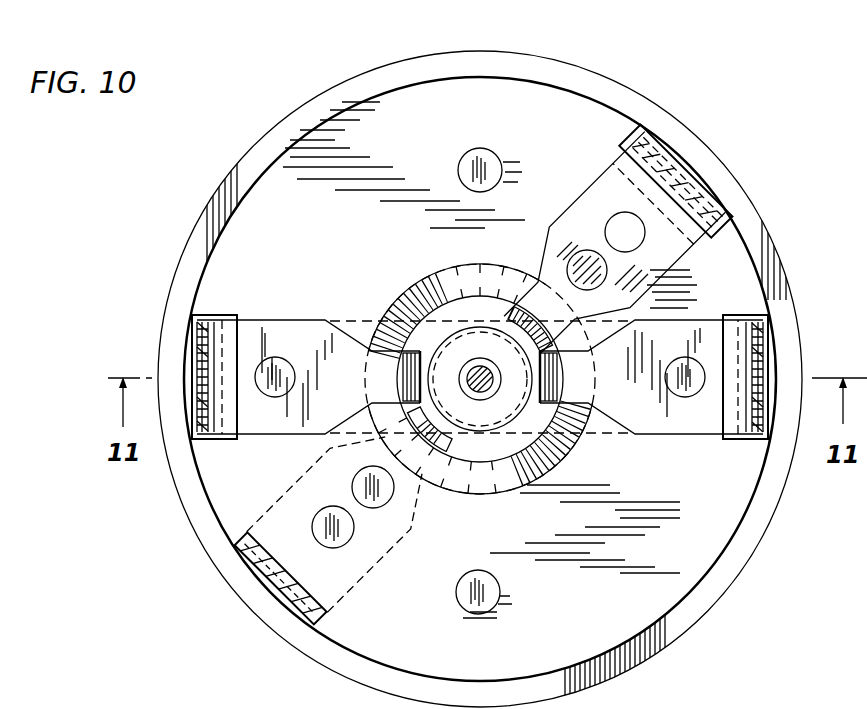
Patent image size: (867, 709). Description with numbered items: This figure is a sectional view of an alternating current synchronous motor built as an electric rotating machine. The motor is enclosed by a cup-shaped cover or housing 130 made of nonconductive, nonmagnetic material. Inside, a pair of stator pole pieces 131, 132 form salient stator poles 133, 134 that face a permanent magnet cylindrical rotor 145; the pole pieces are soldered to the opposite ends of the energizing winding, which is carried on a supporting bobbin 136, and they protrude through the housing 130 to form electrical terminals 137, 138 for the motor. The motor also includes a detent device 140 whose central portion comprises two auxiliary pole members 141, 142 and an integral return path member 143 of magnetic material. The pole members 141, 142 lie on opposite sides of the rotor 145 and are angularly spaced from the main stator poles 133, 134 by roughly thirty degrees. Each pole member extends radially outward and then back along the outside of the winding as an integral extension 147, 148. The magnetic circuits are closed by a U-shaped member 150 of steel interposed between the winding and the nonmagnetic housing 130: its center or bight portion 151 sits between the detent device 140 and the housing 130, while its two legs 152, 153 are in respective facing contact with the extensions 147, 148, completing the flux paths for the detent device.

The housing 130 is at (541, 20).
The stator pole piece 131 is at (287, 487).
The stator pole piece 132 is at (590, 180).
The salient stator pole 133 is at (444, 446).
The salient stator pole 134 is at (524, 302).
The supporting bobbin 136 is at (632, 707).
The electrical terminal 137 is at (250, 566).
The electrical terminal 138 is at (686, 162).
The detent device 140 is at (284, 310).
The auxiliary pole member 141 is at (393, 326).
The auxiliary pole member 142 is at (558, 384).
The return path member 143 is at (466, 456).
The permanent magnet cylindrical rotor 145 is at (440, 285).
The integral extension 147 is at (214, 368).
The integral extension 148 is at (724, 318).
The U-shaped member 150 is at (608, 441).
The bight portion 151 is at (345, 442).
The leg 152 is at (196, 347).
The leg 153 is at (762, 342).